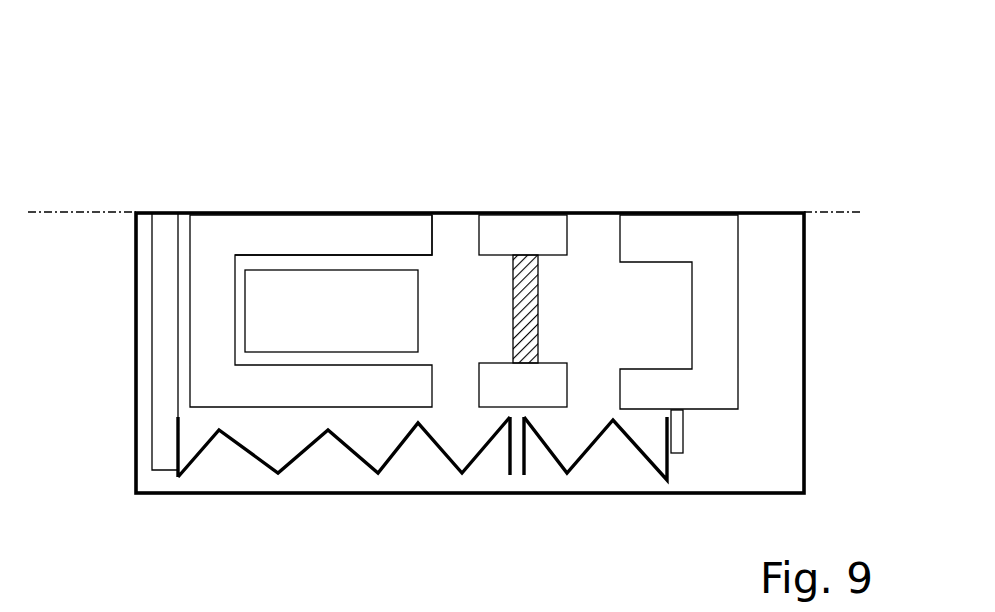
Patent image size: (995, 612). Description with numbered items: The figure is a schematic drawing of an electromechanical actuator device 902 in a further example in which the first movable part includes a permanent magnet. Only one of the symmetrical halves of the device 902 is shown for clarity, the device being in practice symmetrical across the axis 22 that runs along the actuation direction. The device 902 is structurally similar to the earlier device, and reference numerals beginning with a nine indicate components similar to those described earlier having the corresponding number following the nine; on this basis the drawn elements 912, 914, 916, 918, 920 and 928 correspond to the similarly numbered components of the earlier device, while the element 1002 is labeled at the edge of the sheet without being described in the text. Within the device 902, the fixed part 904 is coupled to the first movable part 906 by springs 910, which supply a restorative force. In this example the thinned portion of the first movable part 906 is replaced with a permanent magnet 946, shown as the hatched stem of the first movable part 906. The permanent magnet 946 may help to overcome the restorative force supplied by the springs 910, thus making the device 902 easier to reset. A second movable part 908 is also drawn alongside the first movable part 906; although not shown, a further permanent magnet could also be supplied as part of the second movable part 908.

The axis 22 is at (469, 212).
The electromechanical actuator device 902 is at (157, 108).
The fixed part 904 is at (257, 175).
The first movable part 906 is at (510, 173).
The second movable part 908 is at (675, 173).
The springs 910 is at (348, 452).
The U-shaped conductor 912 is at (163, 423).
The spring joint 914 is at (515, 448).
The second spring 916 is at (567, 473).
The contact block 918 is at (677, 453).
The inner block 920 is at (275, 315).
The upper arm 928 is at (297, 230).
The permanent magnet 946 is at (540, 307).
The base 1002 is at (97, 603).